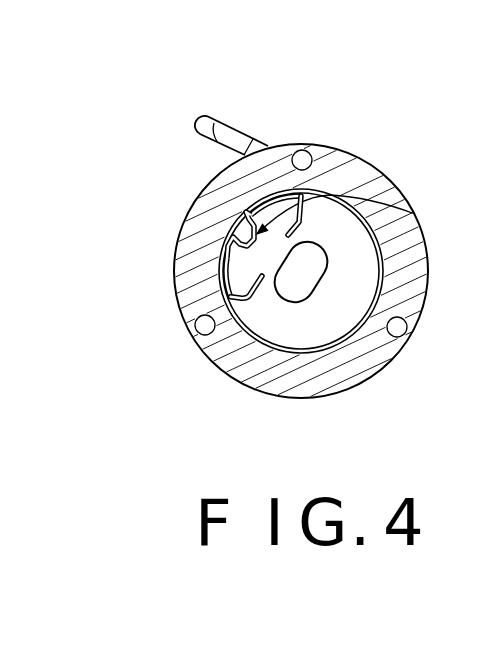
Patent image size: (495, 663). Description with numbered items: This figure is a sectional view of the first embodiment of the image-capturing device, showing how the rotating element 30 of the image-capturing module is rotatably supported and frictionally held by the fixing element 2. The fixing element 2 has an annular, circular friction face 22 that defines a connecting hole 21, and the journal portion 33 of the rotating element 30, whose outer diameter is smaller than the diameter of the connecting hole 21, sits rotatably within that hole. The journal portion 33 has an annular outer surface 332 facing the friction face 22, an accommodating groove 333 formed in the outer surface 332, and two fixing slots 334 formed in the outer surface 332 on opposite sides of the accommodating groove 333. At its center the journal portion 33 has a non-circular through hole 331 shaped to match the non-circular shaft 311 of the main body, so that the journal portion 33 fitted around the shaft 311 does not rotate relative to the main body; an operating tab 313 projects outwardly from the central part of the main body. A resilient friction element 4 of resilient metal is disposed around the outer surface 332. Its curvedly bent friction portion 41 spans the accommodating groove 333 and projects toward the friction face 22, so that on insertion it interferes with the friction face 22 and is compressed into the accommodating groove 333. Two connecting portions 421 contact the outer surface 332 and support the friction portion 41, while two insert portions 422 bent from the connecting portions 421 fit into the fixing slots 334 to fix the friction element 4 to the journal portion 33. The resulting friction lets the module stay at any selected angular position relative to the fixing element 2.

The fixing element 2 is at (407, 267).
The connecting hole 21 is at (415, 214).
The friction face 22 is at (222, 232).
The rotating element 30 is at (245, 85).
The operating tab 313 is at (203, 118).
The accommodating groove 333 is at (298, 197).
The journal portion 33 is at (345, 303).
The outer surface 332 is at (255, 305).
The fixing slot 334 is at (258, 302).
The non-circular shaft 311 is at (310, 300).
The non-circular through hole 331 is at (292, 341).
The resilient friction element 4 is at (262, 189).
The friction portion 41 is at (231, 230).
The connecting portion 421 is at (238, 205).
The insert portion 422 is at (218, 285).